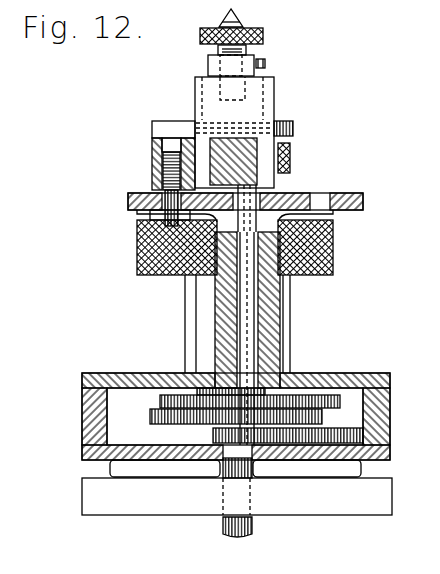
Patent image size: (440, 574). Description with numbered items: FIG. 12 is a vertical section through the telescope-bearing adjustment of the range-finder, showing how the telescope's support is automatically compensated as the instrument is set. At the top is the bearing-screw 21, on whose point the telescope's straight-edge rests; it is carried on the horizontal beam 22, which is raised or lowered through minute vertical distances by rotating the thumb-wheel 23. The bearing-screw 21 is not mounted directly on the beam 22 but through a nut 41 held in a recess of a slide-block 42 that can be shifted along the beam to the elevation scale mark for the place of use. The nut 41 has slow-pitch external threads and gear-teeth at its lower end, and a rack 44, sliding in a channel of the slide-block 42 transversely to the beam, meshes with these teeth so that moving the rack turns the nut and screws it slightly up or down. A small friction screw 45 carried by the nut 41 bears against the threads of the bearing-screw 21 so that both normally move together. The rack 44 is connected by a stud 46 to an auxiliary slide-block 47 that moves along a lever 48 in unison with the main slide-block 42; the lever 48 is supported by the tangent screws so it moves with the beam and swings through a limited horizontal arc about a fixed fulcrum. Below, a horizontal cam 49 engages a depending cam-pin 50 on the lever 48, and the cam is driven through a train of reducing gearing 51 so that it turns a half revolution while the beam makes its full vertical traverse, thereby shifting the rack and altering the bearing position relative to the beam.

The bearing-screw 21 is at (244, 20).
The horizontal beam 22 is at (256, 172).
The thumb-wheel 23 is at (338, 249).
The nut 41 is at (222, 68).
The slide-block 42 is at (276, 103).
The rack 44 is at (295, 130).
The friction screw 45 is at (267, 63).
The stud 46 is at (162, 132).
The auxiliary slide-block 47 is at (160, 143).
The lever 48 is at (163, 180).
The horizontal cam 49 is at (365, 204).
The cam-pin 50 is at (160, 215).
The train of reducing gearing 51 is at (325, 380).